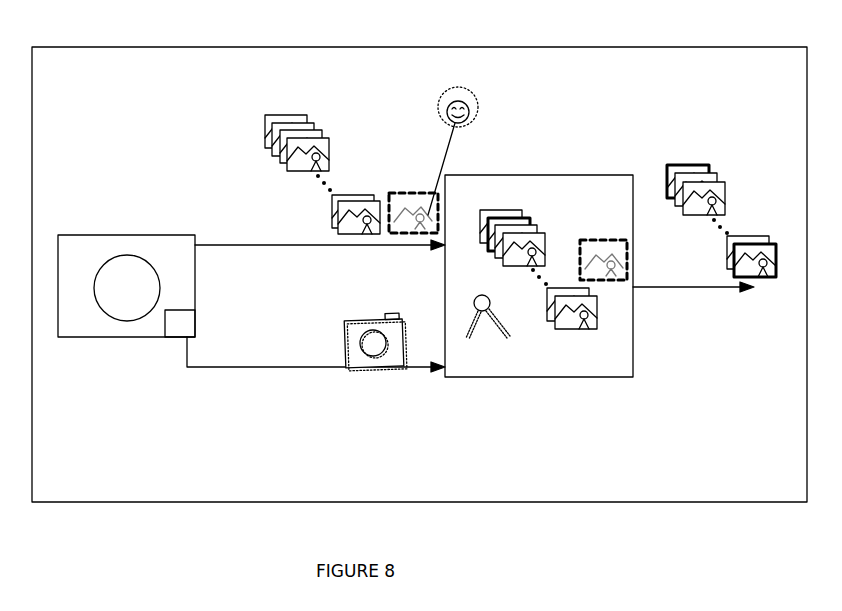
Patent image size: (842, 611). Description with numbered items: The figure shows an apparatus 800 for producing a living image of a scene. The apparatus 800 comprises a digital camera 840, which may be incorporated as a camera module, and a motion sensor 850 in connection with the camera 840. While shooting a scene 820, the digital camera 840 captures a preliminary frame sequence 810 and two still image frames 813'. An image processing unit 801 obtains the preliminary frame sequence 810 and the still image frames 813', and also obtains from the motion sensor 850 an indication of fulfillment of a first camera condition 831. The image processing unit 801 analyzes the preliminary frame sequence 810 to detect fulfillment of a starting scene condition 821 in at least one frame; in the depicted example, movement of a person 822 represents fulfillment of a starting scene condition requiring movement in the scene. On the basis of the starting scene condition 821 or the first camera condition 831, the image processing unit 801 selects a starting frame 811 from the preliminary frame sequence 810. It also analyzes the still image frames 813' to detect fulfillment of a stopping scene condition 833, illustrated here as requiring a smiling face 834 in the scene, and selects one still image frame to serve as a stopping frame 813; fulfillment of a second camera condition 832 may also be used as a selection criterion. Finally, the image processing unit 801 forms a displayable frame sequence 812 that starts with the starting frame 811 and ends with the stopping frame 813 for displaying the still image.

The apparatus 800 is at (238, 47).
The image processing unit 801 is at (486, 177).
The preliminary frame sequence 810 is at (337, 174).
The starting frame 811 is at (528, 217).
The displayable frame sequence 812 is at (737, 208).
The stopping frame 813 is at (767, 233).
The still image frames 813' is at (508, 216).
The scene 820 is at (298, 172).
The starting scene condition 821 is at (433, 343).
The person 822 is at (490, 327).
The first camera condition 831 is at (320, 357).
The second camera condition 832 is at (337, 342).
The stopping scene condition 833 is at (480, 122).
The smiling face 834 is at (478, 110).
The digital camera 840 is at (98, 259).
The motion sensor 850 is at (180, 325).